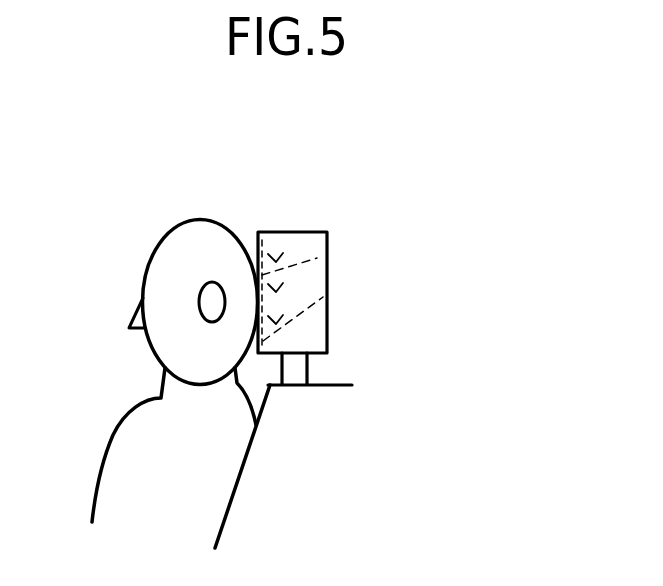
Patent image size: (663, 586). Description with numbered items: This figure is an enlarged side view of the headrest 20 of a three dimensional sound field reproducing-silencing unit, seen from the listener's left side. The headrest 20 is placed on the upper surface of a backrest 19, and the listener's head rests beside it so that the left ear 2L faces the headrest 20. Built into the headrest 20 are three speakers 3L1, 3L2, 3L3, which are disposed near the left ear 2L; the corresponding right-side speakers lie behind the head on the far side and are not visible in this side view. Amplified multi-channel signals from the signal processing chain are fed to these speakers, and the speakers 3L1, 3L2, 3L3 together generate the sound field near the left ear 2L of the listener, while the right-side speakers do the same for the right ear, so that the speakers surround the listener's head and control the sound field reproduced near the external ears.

The left ear 2L is at (208, 303).
The speaker 3L1 is at (288, 245).
The speaker 3L2 is at (317, 258).
The speaker 3L3 is at (323, 297).
The backrest 19 is at (318, 463).
The headrest 20 is at (327, 332).